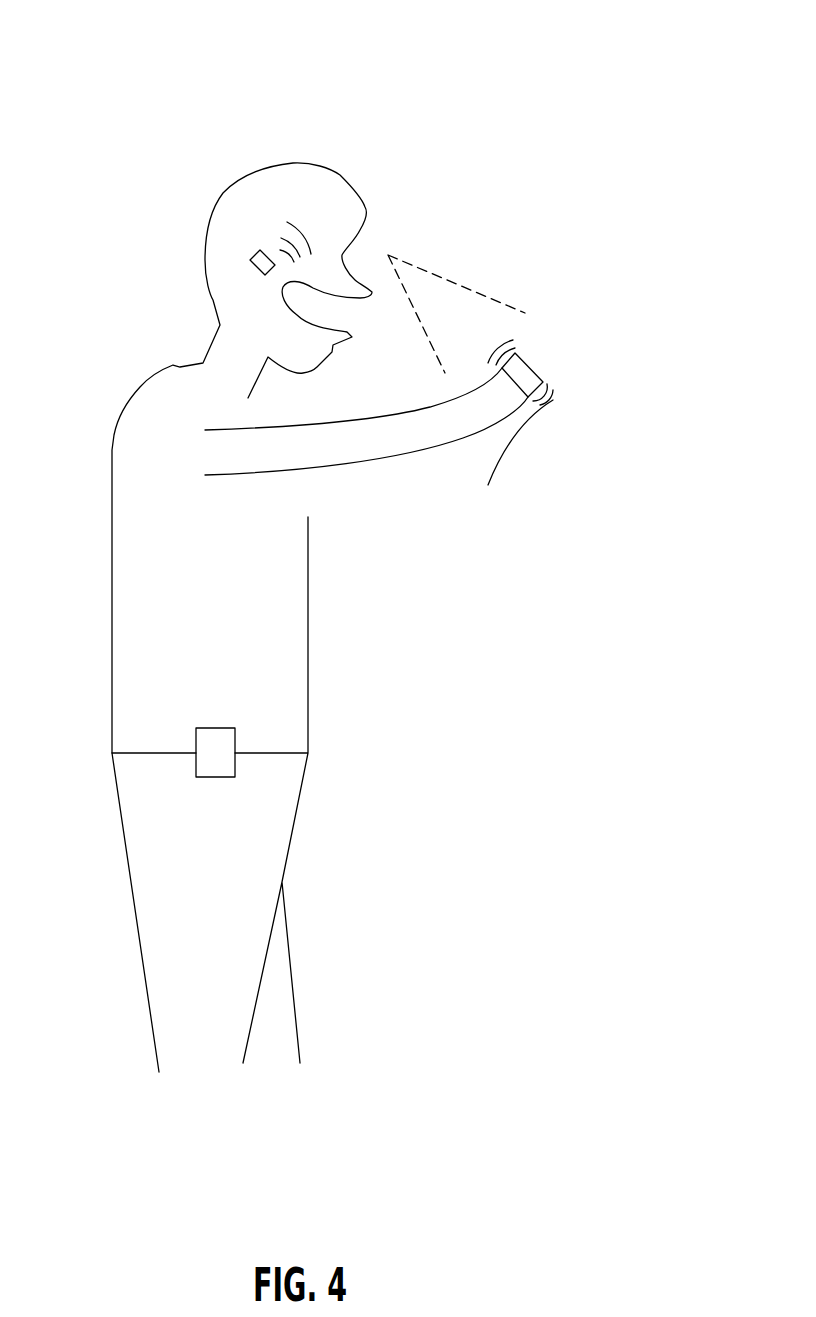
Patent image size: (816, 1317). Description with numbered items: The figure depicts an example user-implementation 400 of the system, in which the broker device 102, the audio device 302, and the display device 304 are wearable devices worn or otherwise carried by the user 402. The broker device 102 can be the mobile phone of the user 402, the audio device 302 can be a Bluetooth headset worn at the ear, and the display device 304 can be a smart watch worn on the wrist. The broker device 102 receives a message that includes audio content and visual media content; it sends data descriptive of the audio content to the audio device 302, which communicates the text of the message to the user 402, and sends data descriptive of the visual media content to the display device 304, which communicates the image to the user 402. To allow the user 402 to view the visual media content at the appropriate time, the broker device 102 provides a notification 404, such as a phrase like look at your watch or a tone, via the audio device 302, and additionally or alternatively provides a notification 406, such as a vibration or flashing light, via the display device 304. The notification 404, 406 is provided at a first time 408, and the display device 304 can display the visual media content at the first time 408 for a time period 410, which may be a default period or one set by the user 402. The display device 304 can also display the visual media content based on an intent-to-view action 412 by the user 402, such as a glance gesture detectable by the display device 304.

The user-implementation 400 is at (102, 53).
The user 402 is at (147, 383).
The audio device 302 is at (260, 270).
The notification 404 is at (296, 232).
The display device 304 is at (523, 377).
The notification 406 is at (510, 461).
The first time 408 is at (568, 443).
The time period 410 is at (572, 301).
The intent-to-view action 412 is at (428, 273).
The broker device 102 is at (205, 743).